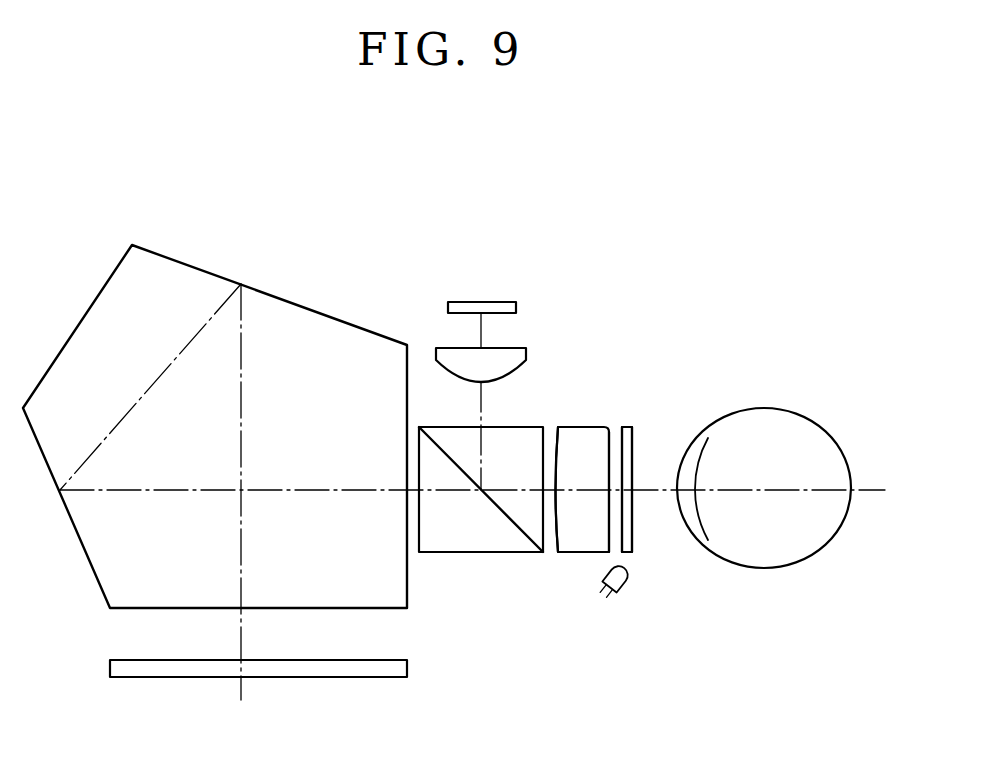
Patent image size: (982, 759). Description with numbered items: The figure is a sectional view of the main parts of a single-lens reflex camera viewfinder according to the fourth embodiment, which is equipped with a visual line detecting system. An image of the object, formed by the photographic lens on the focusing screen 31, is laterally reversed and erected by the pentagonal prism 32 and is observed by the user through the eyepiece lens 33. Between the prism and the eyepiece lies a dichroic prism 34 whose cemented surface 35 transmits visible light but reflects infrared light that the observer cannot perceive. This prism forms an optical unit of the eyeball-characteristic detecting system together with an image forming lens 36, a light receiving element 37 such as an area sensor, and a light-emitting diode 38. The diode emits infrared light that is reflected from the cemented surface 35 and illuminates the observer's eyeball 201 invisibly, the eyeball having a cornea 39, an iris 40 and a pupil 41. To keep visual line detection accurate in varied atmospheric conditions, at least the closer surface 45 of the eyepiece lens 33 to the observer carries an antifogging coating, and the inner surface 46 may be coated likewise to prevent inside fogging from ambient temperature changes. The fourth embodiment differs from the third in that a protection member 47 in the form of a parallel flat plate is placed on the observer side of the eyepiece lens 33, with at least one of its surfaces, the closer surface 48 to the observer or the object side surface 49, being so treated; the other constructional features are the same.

The focusing screen 31 is at (134, 670).
The pentagonal prism 32 is at (102, 553).
The eyepiece lens 33 is at (588, 435).
The dichroic prism 34 is at (443, 547).
The cemented surface 35 is at (520, 535).
The image forming lens 36 is at (517, 363).
The light receiving element 37 is at (505, 302).
The light-emitting diode 38 is at (617, 585).
The cornea 39 is at (707, 442).
The iris 40 is at (700, 538).
The pupil 41 is at (681, 507).
The closer surface of the eyepiece lens 45 is at (618, 437).
The inner surface of the eyepiece lens 46 is at (557, 433).
The protection member 47 is at (630, 430).
The closer surface of the protection member 48 is at (630, 448).
The object side surface of the protection member 49 is at (620, 532).
The eyeball 201 is at (775, 410).